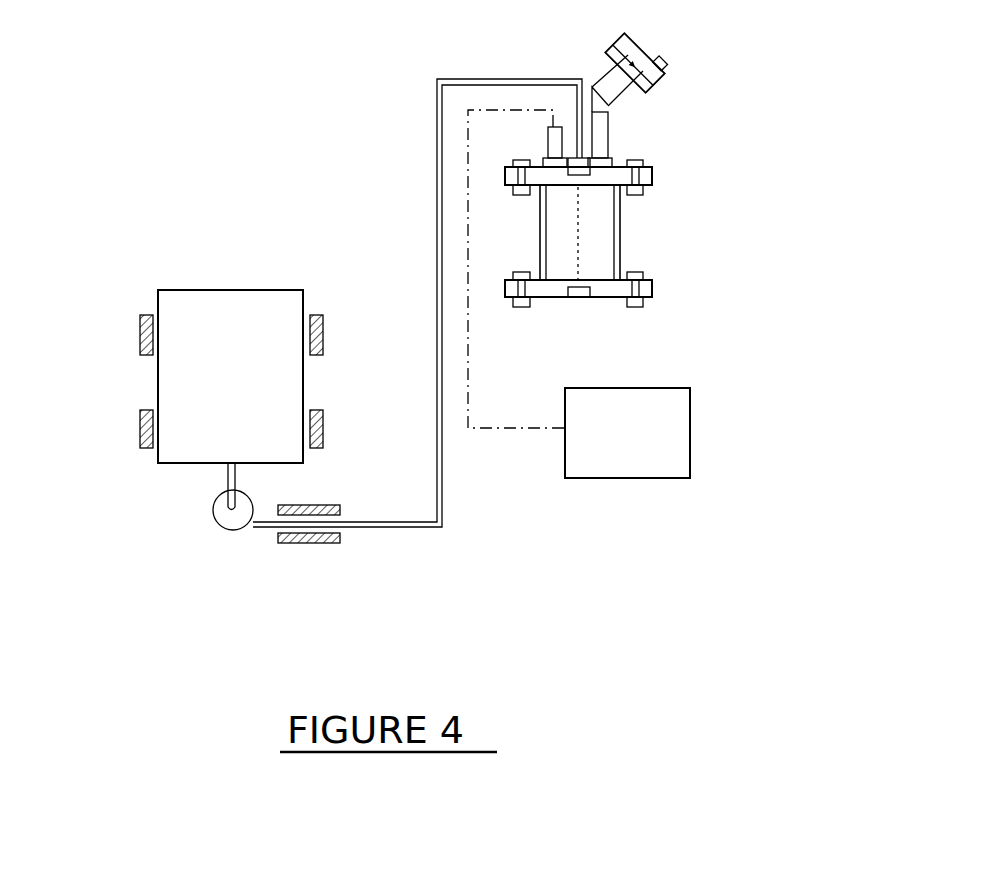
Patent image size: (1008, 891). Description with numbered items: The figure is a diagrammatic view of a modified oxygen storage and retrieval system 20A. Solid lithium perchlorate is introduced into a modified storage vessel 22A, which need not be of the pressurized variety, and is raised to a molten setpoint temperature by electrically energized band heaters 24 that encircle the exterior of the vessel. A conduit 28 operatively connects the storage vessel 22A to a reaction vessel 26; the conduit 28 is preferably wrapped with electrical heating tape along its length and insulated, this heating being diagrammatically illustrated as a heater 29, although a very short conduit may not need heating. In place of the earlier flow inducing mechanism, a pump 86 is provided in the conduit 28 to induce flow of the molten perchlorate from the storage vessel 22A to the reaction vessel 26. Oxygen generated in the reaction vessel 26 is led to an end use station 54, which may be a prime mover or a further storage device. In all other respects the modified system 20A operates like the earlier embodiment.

The modified system 20A is at (238, 180).
The modified storage vessel 22A is at (268, 397).
The heaters 24 is at (138, 336).
The reaction vessel 26 is at (650, 232).
The conduit 28 is at (402, 529).
The heater 29 is at (313, 544).
The end use station 54 is at (650, 443).
The pump 86 is at (214, 518).